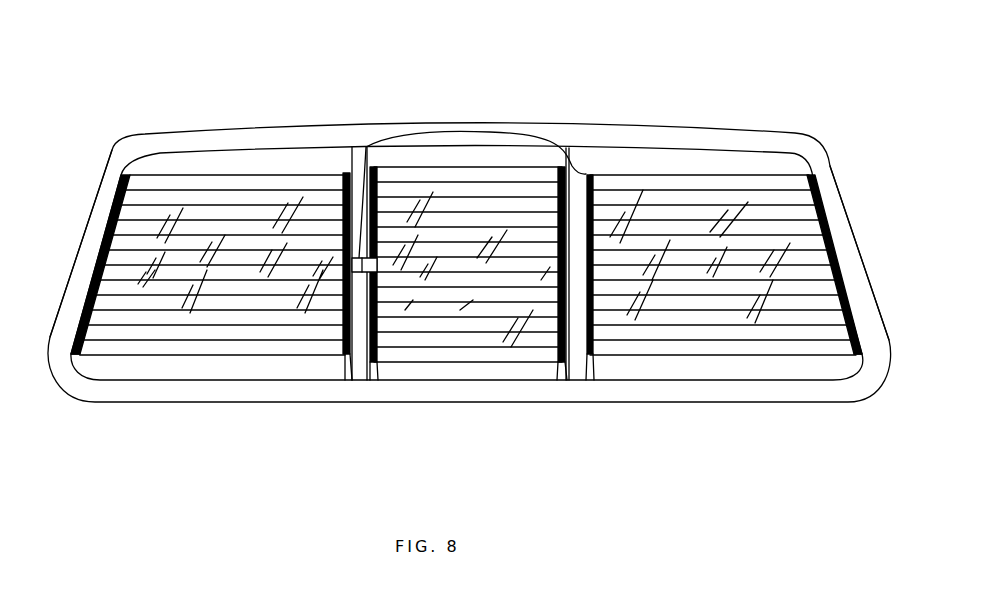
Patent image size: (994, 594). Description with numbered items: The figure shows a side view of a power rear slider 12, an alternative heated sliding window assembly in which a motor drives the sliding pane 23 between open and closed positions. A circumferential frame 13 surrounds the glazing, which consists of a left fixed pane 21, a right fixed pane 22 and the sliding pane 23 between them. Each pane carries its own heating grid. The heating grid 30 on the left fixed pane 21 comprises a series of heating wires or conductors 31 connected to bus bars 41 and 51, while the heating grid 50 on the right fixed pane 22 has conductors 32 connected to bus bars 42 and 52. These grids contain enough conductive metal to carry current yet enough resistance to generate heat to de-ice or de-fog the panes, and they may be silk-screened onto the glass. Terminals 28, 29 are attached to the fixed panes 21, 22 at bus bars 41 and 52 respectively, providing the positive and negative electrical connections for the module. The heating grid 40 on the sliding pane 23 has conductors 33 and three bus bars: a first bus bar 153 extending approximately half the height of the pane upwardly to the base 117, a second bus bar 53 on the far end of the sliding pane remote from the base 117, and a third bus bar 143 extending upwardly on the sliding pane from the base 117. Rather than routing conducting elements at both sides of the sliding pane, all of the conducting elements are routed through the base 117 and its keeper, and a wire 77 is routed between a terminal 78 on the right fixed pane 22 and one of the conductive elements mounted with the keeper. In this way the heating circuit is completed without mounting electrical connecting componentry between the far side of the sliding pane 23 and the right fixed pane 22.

The power rear slider 12 is at (469, 206).
The circumferential frame 13 is at (159, 143).
The left fixed pane 21 is at (212, 269).
The right fixed pane 22 is at (723, 268).
The sliding pane 23 is at (477, 263).
The terminal 28 is at (127, 173).
The terminal 29 is at (813, 175).
The heating grid 30 is at (76, 280).
The heating wires or conductors 31 is at (240, 355).
The heating wires or conductors 32 is at (693, 355).
The heating wires or conductors 33 is at (447, 362).
The heating grid 40 is at (577, 164).
The bus bar 41 is at (74, 357).
The bus bar 42 is at (588, 354).
The heating grid 50 is at (831, 211).
The bus bar 51 is at (348, 355).
The bus bar 52 is at (858, 357).
The second bus bar 53 is at (563, 362).
The wire 77 is at (478, 132).
The terminal 78 is at (592, 176).
The base 117 is at (352, 262).
The third bus bar 143 is at (383, 186).
The first bus bar 153 is at (377, 362).